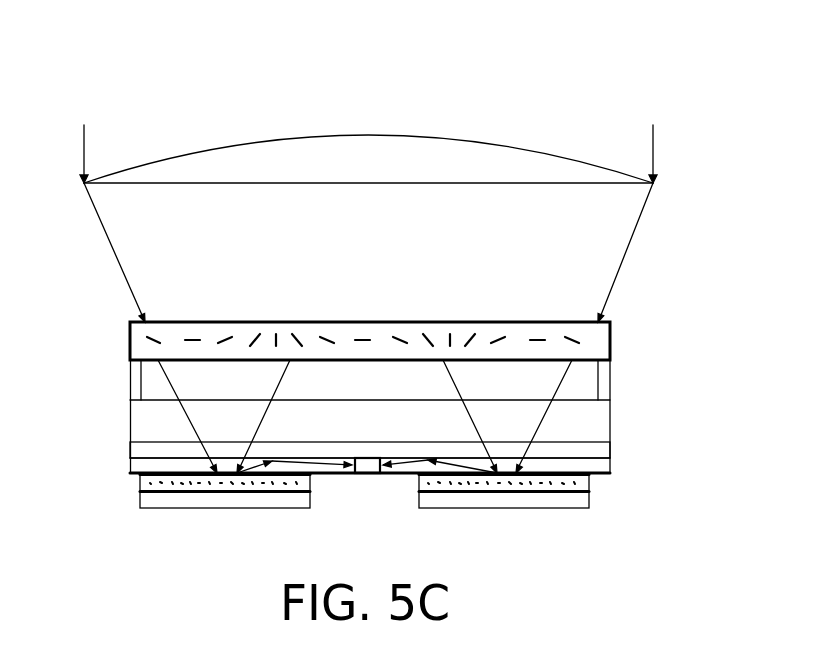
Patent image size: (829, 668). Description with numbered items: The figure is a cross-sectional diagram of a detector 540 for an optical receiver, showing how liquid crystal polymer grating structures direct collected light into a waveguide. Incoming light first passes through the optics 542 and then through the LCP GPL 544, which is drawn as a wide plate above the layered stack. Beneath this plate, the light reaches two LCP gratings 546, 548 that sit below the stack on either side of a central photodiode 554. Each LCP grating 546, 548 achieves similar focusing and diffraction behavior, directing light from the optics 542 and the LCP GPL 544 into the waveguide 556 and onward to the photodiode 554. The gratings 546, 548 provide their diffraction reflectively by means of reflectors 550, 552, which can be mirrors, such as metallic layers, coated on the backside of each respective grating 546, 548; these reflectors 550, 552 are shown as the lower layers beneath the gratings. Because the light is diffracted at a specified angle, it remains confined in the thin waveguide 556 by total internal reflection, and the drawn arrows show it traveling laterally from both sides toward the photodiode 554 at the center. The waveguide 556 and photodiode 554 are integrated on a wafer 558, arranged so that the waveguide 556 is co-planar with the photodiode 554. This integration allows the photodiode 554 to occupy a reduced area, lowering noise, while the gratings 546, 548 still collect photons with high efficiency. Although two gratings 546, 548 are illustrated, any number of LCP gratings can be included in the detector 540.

The detector 540 is at (584, 103).
The optics 542 is at (389, 173).
The LCP GPL 544 is at (380, 322).
The LCP grating 546 is at (140, 488).
The LCP grating 548 is at (590, 487).
The reflector 550 is at (140, 497).
The reflector 552 is at (528, 507).
The photodiode 554 is at (369, 476).
The waveguide 556 is at (611, 468).
The wafer 558 is at (611, 446).